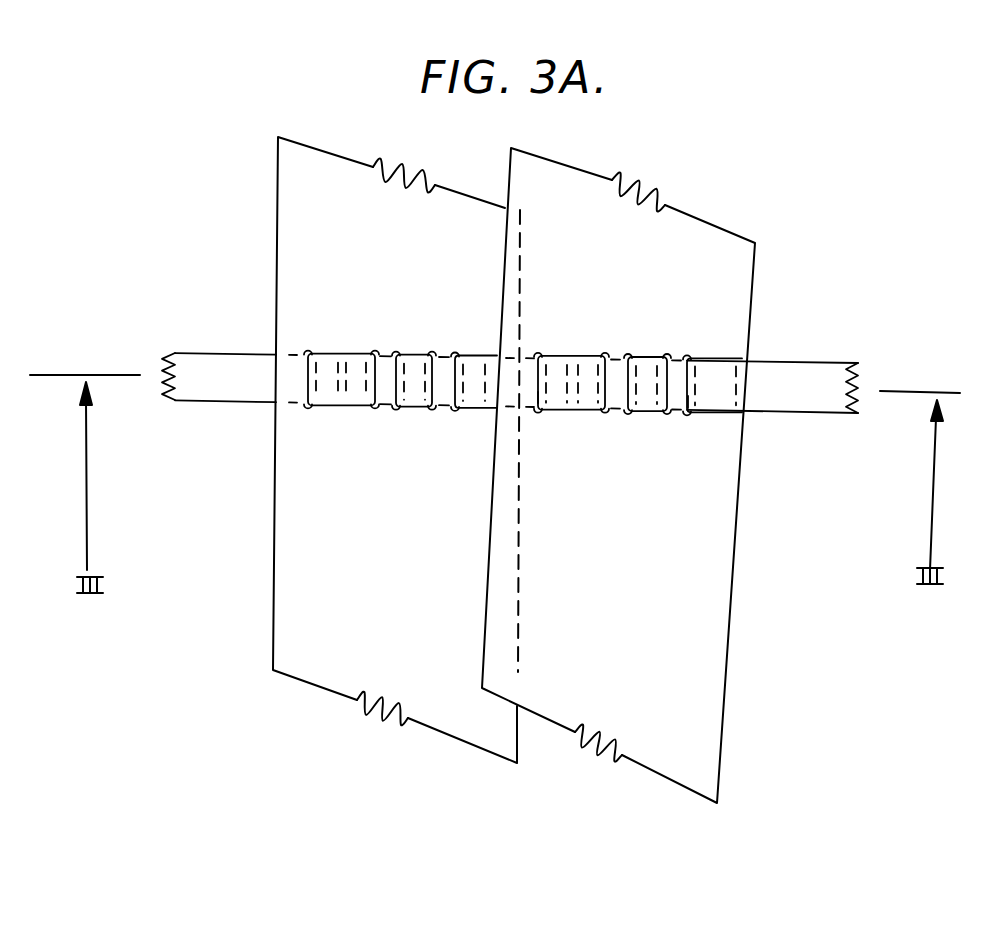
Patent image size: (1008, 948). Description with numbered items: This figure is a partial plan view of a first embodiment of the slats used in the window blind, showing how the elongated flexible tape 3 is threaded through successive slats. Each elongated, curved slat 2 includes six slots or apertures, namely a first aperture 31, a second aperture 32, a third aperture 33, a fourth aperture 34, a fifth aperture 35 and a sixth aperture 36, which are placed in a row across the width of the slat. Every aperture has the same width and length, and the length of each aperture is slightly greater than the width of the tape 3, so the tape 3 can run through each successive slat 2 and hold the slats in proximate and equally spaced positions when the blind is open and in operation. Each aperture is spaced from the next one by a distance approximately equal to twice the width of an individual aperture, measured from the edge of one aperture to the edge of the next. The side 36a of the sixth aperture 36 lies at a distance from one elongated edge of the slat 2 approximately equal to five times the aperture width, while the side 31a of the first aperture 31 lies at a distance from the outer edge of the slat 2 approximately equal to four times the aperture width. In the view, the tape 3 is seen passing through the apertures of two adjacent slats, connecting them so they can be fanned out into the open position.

The slat 2 is at (722, 669).
The flexible tape 3 is at (831, 373).
The first aperture 31 is at (538, 352).
The second aperture 32 is at (571, 352).
The third aperture 33 is at (603, 352).
The fourth aperture 34 is at (631, 352).
The fifth aperture 35 is at (661, 352).
The sixth aperture 36 is at (691, 355).
The side of first aperture 31a is at (541, 393).
The side of sixth aperture 36a is at (699, 397).